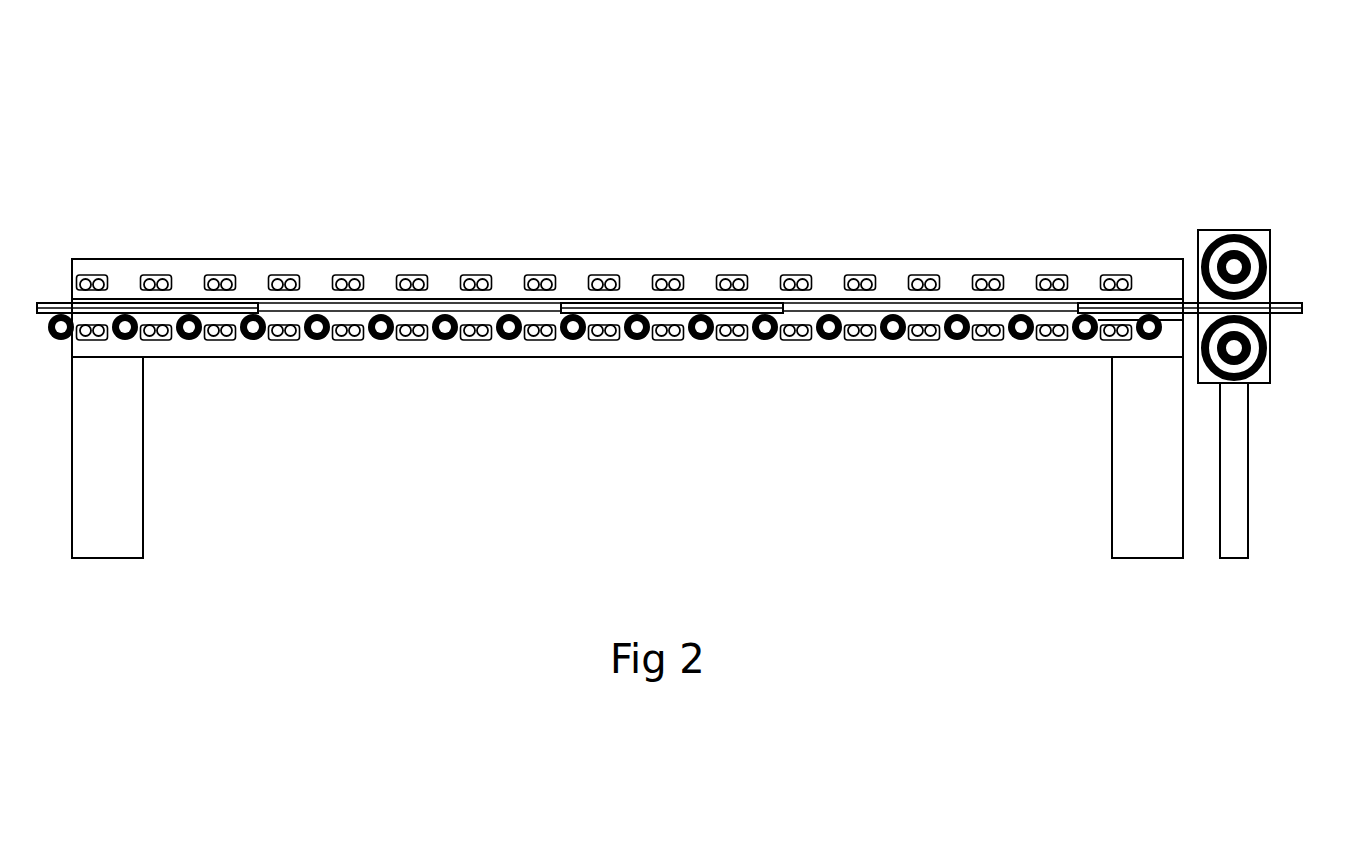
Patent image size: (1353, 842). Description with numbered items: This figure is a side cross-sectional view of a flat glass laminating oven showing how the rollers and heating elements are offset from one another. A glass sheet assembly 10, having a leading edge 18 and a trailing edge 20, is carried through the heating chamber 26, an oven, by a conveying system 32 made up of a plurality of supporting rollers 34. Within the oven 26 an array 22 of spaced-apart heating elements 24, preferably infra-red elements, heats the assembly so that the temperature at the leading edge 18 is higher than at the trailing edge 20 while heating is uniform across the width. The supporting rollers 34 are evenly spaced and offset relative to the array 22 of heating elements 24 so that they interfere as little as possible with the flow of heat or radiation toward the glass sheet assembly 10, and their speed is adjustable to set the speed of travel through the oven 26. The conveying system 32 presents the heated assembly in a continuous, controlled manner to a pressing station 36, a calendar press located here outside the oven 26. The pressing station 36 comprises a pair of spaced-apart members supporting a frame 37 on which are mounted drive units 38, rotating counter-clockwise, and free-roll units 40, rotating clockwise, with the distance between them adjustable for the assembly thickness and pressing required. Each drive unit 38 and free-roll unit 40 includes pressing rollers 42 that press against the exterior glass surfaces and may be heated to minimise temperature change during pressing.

The glass sheet assembly 10 is at (183, 305).
The leading edge 18 is at (258, 302).
The trailing edge 20 is at (45, 303).
The array of heating elements 22 is at (700, 225).
The heating elements 24 is at (533, 277).
The heating chamber 26 is at (598, 177).
The conveying system 32 is at (277, 360).
The supporting rollers 34 is at (508, 340).
The pressing station 36 is at (1230, 192).
The frame 37 is at (1238, 503).
The drive units 38 is at (1222, 253).
The free-roll units 40 is at (1248, 348).
The pressing rollers 42 is at (1272, 282).